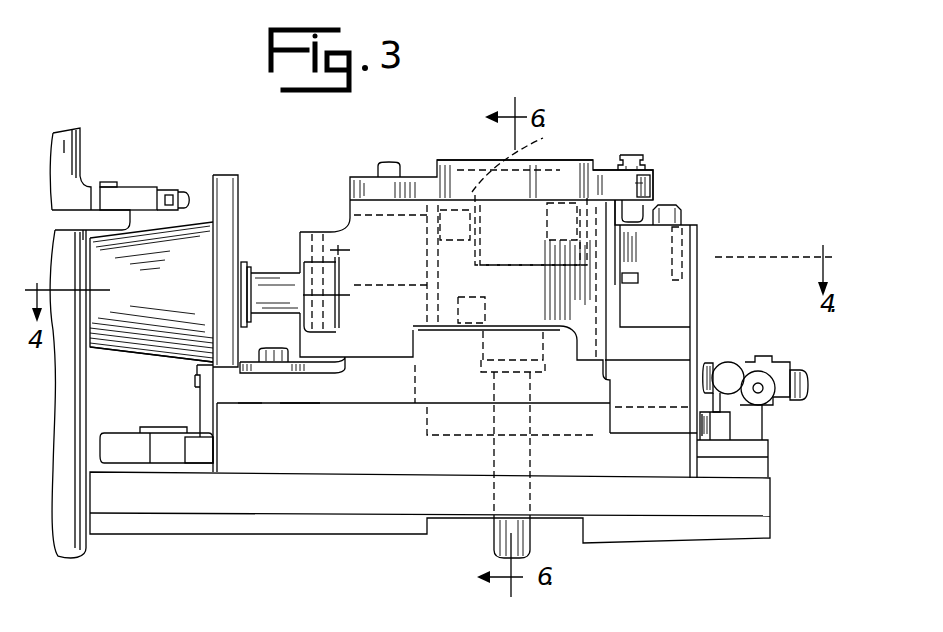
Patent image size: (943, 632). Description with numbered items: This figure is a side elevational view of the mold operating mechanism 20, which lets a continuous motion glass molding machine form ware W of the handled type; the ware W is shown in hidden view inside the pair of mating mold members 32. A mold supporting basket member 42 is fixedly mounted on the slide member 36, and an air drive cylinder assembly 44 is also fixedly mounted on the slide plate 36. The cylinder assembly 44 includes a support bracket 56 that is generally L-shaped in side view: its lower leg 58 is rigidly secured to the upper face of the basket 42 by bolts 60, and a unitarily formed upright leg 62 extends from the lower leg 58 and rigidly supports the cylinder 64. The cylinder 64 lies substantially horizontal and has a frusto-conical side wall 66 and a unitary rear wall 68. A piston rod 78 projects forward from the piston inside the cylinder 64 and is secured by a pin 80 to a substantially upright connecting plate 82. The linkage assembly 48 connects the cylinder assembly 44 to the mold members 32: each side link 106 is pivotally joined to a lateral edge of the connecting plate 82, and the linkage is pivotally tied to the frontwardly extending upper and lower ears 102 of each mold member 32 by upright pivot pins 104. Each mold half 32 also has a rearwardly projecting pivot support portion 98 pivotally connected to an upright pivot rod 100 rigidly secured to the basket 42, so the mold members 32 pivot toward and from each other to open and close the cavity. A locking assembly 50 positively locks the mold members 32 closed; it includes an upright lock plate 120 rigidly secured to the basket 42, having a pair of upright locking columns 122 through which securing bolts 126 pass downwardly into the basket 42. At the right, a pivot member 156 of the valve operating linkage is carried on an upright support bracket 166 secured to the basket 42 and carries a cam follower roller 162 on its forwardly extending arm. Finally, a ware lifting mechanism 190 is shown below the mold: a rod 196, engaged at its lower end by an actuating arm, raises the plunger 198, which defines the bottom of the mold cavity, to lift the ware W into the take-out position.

The mold operating mechanism 20 is at (663, 189).
The mold members 32 is at (437, 178).
The slide member 36 is at (180, 490).
The mold supporting basket member 42 is at (337, 443).
The air drive cylinder assembly 44 is at (163, 357).
The linkage assembly 48 is at (348, 216).
The locking assembly 50 is at (637, 248).
The support bracket 56 is at (251, 387).
The lower leg 58 is at (297, 391).
The bolts 60 is at (275, 349).
The upright leg 62 is at (238, 232).
The cylinder 64 is at (115, 337).
The frusto-conical side wall 66 is at (192, 240).
The rear wall 68 is at (88, 322).
The piston rod 78 is at (270, 278).
The pin 80 is at (325, 280).
The connecting plate 82 is at (308, 260).
The pivot support portion 98 is at (417, 193).
The upright pivot rod 100 is at (390, 162).
The ears 102 is at (648, 188).
The upright pivot pins 104 is at (633, 154).
The side link 106 is at (511, 235).
The lock plate 120 is at (658, 424).
The locking columns 122 is at (698, 257).
The securing bolts 126 is at (668, 210).
The pivot member 156 is at (780, 370).
The cam follower roller 162 is at (808, 372).
The upright support bracket 166 is at (734, 372).
The ware lifting mechanism 190 is at (493, 449).
The rod 196 is at (498, 528).
The plunger 198 is at (503, 302).
The ware W is at (543, 141).